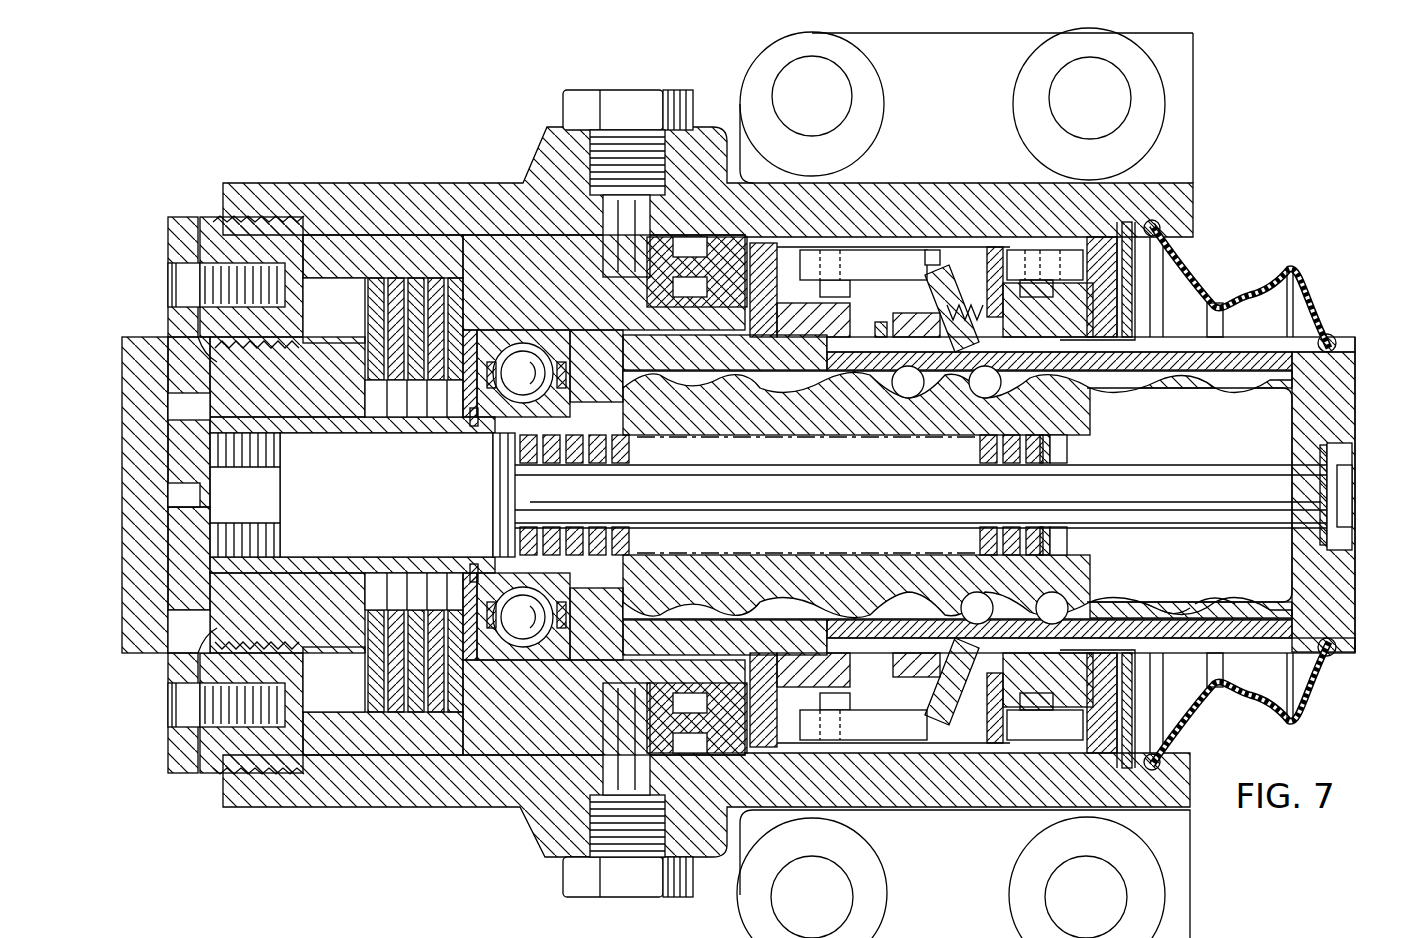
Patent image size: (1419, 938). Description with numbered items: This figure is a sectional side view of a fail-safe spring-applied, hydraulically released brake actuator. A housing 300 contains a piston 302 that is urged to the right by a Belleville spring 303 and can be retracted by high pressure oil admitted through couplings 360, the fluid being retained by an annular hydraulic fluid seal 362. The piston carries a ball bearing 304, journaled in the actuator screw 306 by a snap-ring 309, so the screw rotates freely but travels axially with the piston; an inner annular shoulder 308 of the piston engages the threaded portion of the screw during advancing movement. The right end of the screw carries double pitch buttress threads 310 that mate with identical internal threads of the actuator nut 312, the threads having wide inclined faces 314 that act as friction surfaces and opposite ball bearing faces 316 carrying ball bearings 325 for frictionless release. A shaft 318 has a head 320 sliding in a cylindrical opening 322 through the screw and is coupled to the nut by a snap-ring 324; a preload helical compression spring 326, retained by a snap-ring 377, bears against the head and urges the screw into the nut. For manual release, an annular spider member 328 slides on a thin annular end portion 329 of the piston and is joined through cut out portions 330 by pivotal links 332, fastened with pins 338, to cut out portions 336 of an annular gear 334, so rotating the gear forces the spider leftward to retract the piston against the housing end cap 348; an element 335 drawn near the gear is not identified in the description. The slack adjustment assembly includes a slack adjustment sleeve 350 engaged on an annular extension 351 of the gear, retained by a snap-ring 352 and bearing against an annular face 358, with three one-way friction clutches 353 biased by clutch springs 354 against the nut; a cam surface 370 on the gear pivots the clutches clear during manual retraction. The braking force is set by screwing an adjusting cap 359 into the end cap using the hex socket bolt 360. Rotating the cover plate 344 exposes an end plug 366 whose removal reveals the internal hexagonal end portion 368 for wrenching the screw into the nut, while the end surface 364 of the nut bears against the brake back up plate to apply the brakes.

The housing 300 is at (310, 783).
The piston 302 is at (393, 737).
The Belleville spring 303 is at (435, 700).
The ball bearing 304 is at (505, 660).
The actuator screw 306 is at (727, 577).
The inner annular shoulder 308 is at (628, 632).
The snap-ring 309 is at (470, 425).
The double pitch buttress threads 310 is at (764, 601).
The actuator nut 312 is at (1102, 623).
The inclined faces 314 is at (1170, 617).
The ball bearing faces 316 is at (1199, 593).
The shaft 318 is at (1267, 510).
The head 320 is at (503, 483).
The cylindrical opening 322 is at (365, 553).
The snap-ring 324 is at (1340, 535).
The ball bearings 325 is at (903, 400).
The preload helical compression spring 326 is at (1070, 452).
The annular spider member 328 is at (747, 347).
The thin annular end portion 329 is at (803, 337).
The cut out portions 330 is at (845, 292).
The pivotal links 332 is at (935, 260).
The annular gear 334 is at (1083, 237).
The boot 335 is at (1238, 330).
The cut out portions 336 is at (1082, 265).
The pins 338 is at (1055, 290).
The cover plate 344 is at (143, 478).
The housing end cap 348 is at (213, 232).
The slack adjustment sleeve 350 is at (960, 200).
The annular extension 351 is at (882, 322).
The snap-ring 352 is at (863, 495).
The one-way friction clutches 353 is at (1000, 300).
The clutch springs 354 is at (1100, 330).
The annular face 358 is at (995, 235).
The adjusting cap 359 is at (217, 360).
The hex socket bolt 360 is at (170, 277).
The annular hydraulic fluid seal 362 is at (720, 243).
The end surface 364 is at (1355, 577).
The end plug 366 is at (185, 598).
The internal hexagonal end portion 368 is at (245, 548).
The cam surface 370 is at (948, 300).
The snap-ring 377 is at (1070, 438).